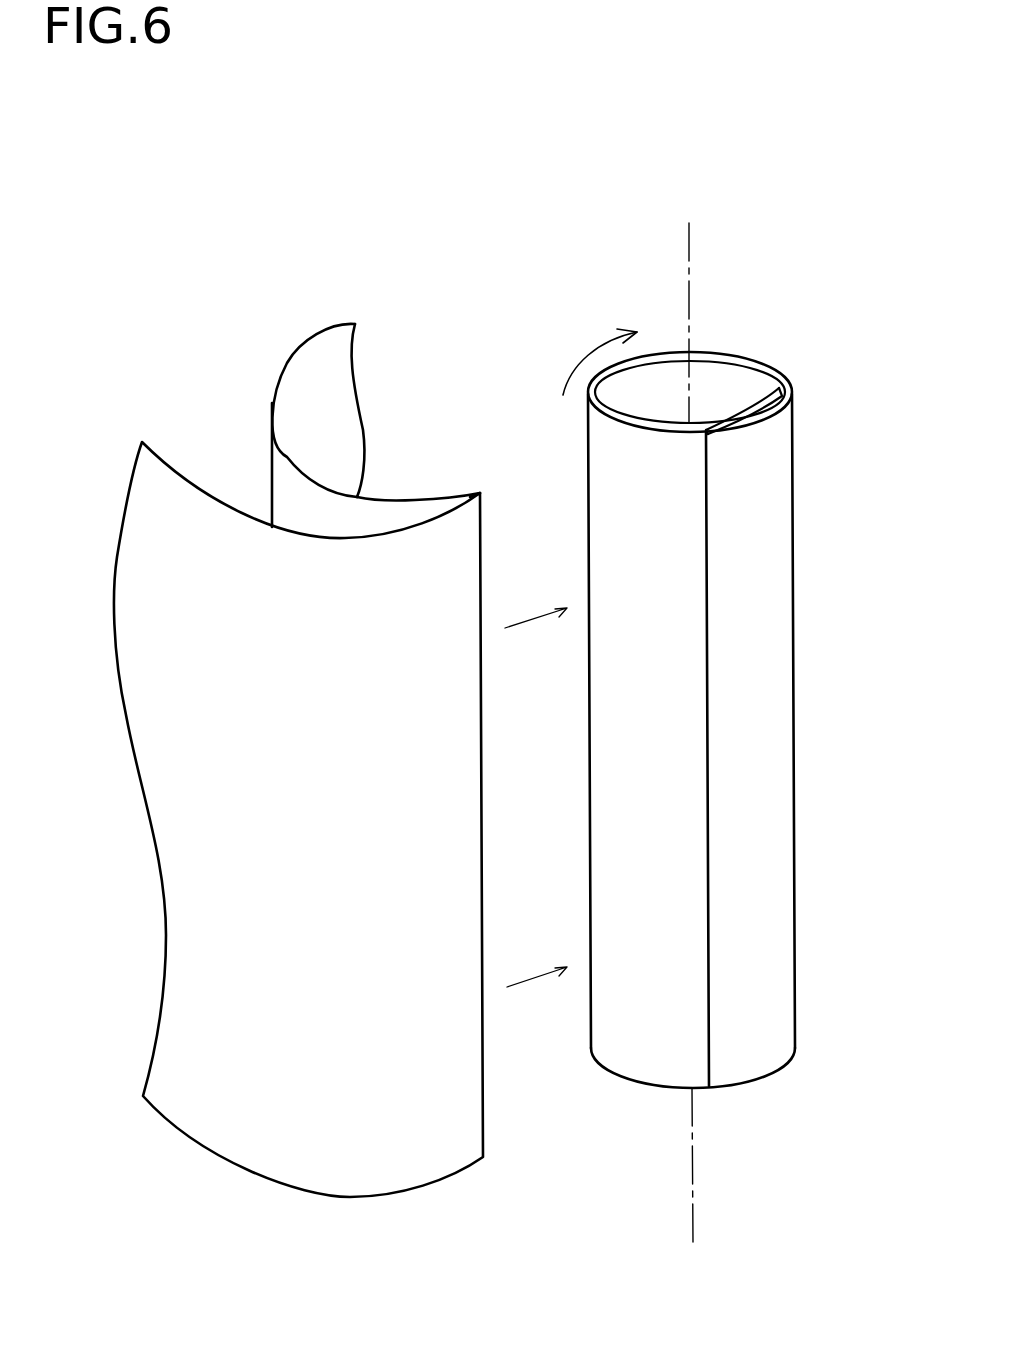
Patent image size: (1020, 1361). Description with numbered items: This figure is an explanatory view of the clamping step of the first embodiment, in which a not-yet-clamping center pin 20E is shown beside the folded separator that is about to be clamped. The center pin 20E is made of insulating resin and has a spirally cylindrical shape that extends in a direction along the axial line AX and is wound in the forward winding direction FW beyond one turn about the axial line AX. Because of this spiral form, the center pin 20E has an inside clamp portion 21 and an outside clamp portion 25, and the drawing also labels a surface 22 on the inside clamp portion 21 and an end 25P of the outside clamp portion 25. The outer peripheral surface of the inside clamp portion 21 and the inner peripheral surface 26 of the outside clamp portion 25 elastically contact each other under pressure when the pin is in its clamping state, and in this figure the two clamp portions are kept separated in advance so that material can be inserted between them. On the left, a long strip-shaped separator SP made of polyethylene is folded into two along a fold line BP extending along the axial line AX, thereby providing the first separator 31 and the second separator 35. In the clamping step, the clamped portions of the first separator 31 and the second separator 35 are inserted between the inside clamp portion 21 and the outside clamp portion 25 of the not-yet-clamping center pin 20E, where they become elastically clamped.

The center pin 20E is at (783, 282).
The inside clamp portion 21 is at (727, 407).
The outer surface 22 is at (752, 410).
The outside clamp portion 25 is at (770, 410).
The tip of end portion 25P is at (720, 437).
The inner peripheral surface 26 is at (705, 458).
The second separator 35 is at (192, 487).
The first separator 31 is at (395, 500).
The separator SP is at (308, 340).
The fold line BP is at (480, 493).
The axial line AX is at (688, 714).
The forward winding direction FW is at (591, 356).